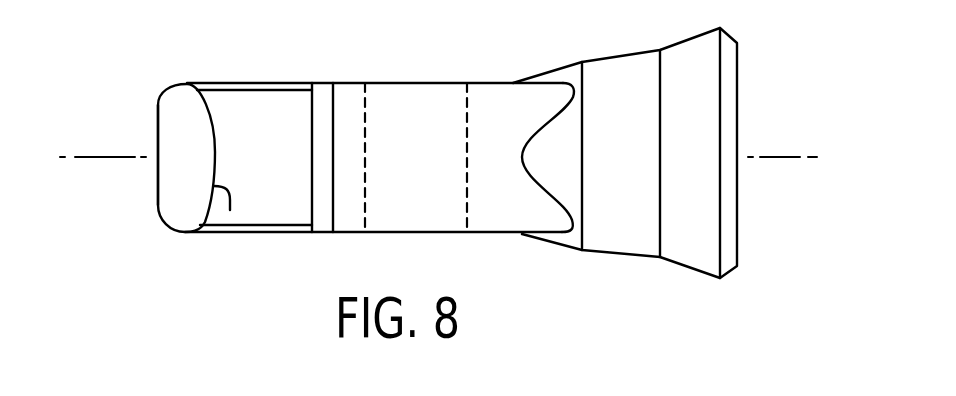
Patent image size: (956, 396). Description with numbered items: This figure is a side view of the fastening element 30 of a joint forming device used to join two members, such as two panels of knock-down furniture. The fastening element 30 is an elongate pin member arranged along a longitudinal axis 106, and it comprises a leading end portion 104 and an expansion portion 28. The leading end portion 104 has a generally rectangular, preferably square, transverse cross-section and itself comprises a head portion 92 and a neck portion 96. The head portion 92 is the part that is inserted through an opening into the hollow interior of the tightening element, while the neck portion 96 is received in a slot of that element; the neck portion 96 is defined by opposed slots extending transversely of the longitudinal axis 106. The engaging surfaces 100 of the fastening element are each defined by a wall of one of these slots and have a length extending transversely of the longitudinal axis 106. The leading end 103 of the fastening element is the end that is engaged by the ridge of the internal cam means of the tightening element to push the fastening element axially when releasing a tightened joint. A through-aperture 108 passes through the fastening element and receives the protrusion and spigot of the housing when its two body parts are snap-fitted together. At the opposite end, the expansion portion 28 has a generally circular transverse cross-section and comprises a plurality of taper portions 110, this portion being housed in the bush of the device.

The expansion portion 28 is at (628, 77).
The fastening element 30 is at (287, 256).
The head portion 92 is at (183, 113).
The neck portion 96 is at (281, 116).
The engaging surfaces 100 is at (230, 210).
The leading end 103 is at (158, 118).
The leading end portion 104 is at (415, 83).
The longitudinal axis 106 is at (762, 157).
The through-aperture 108 is at (449, 96).
The taper portions 110 is at (683, 265).